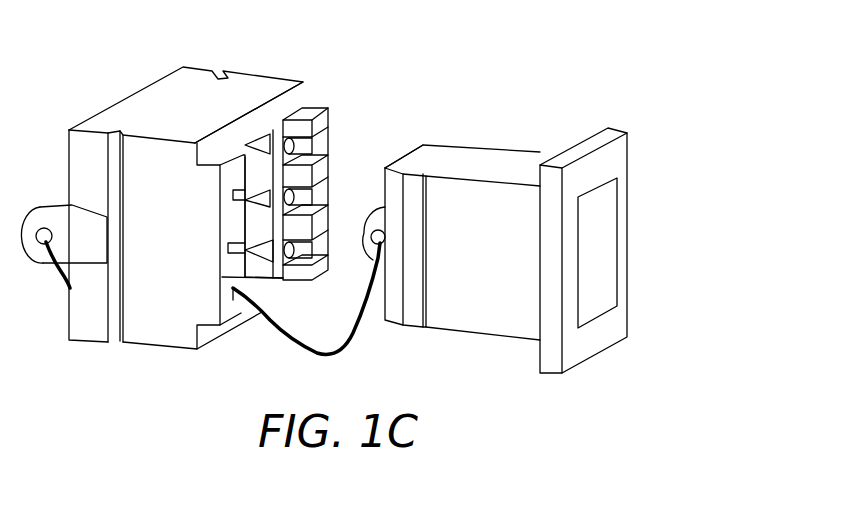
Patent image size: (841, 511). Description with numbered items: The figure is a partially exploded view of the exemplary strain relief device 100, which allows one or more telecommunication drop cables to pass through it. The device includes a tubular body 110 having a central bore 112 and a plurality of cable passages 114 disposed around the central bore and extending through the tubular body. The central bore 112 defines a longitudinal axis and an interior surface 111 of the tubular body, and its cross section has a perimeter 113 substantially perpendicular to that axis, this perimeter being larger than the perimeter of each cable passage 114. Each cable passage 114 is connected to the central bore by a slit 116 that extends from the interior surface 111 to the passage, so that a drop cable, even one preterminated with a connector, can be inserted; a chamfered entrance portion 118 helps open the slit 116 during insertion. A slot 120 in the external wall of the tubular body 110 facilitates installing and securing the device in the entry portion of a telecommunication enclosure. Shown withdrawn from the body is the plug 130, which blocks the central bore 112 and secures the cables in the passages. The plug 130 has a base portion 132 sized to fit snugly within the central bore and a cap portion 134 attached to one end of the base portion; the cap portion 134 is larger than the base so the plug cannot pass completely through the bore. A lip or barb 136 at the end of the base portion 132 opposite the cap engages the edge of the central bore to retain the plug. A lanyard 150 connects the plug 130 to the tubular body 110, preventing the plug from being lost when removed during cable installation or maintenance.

The strain relief device 100 is at (408, 69).
The tubular body 110 is at (209, 205).
The interior surface 111 is at (260, 221).
The central bore 112 is at (246, 267).
The perimeter 113 is at (233, 147).
The cable passages 114 is at (293, 199).
The slit 116 is at (246, 150).
The chamfered entrance portion 118 is at (281, 150).
The slot 120 is at (118, 344).
The plug 130 is at (541, 243).
The base portion 132 is at (473, 320).
The cap portion 134 is at (600, 340).
The lip or barb 136 is at (415, 173).
The lanyard 150 is at (350, 348).